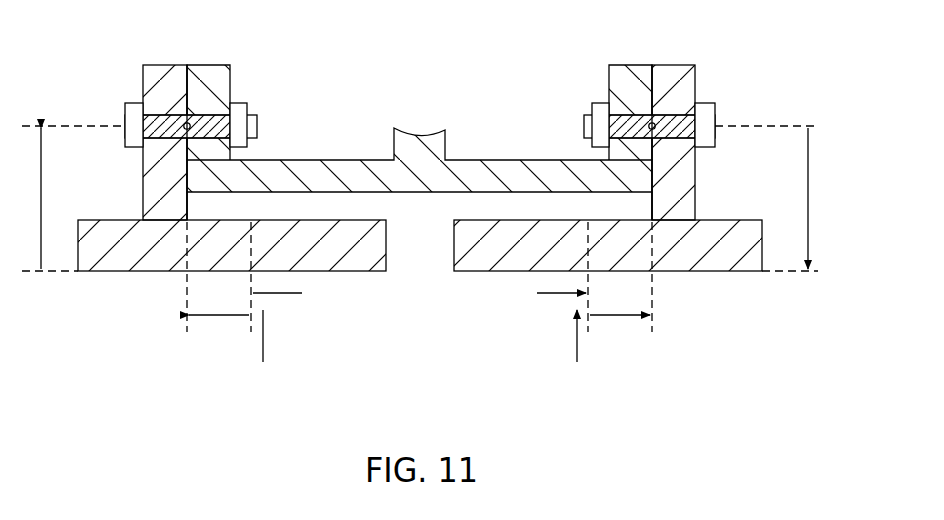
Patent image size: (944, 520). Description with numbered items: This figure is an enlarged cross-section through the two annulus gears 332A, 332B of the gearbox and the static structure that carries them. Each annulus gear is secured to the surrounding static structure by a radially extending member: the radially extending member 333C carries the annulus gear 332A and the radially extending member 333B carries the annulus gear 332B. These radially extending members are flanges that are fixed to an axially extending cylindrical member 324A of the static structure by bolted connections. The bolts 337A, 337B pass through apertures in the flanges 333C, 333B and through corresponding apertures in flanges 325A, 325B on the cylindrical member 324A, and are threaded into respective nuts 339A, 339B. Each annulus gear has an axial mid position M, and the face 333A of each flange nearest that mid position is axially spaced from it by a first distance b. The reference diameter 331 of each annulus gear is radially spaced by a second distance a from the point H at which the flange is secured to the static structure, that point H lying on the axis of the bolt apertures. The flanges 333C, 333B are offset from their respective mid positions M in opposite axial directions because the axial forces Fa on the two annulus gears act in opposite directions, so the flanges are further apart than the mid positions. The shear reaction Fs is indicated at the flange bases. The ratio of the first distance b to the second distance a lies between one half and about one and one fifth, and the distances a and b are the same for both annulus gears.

The reference diameter 331 is at (412, 298).
The annulus gear 332A is at (315, 271).
The annulus gear 332B is at (505, 271).
The axially extending member 324A is at (537, 175).
The flange 325A is at (227, 82).
The flange 325B is at (620, 88).
The face 333A is at (188, 212).
The radially extending member 333B is at (690, 187).
The radially extending member 333C is at (152, 85).
The bolt 337A is at (132, 150).
The bolt 337B is at (712, 120).
The nut 339A is at (243, 108).
The nut 339B is at (590, 108).
The point H is at (184, 123).
The axial mid position M is at (588, 238).
The second distance a is at (426, 198).
The first distance b is at (419, 277).
The axial force Fa is at (419, 310).
The shear force Fs is at (420, 352).